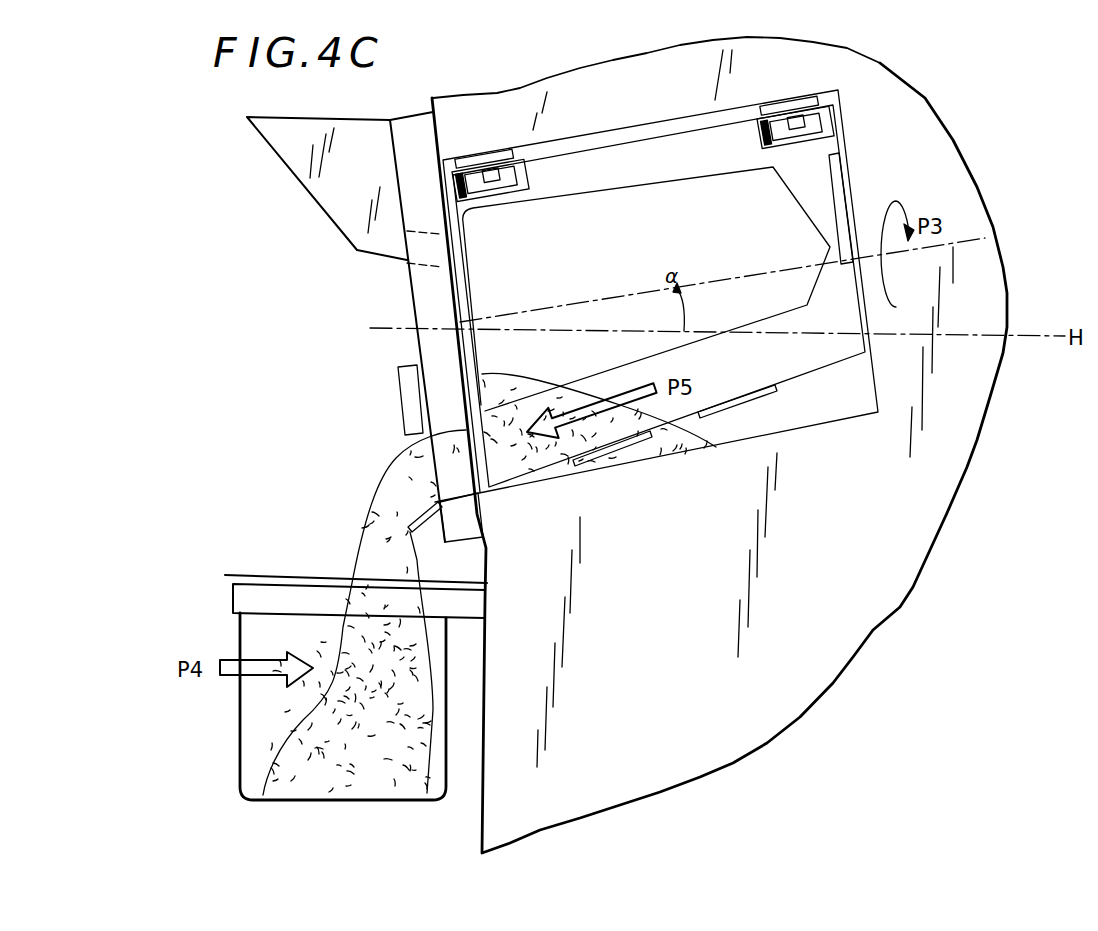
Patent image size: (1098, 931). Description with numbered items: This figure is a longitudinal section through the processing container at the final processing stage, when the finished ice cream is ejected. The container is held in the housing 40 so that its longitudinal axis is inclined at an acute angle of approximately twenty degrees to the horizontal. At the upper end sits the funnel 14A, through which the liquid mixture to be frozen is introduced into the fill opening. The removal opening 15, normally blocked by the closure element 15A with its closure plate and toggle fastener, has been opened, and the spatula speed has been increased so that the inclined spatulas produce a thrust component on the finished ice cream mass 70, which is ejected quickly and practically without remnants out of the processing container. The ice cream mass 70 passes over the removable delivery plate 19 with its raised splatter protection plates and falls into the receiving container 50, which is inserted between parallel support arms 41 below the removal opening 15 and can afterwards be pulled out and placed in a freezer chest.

The funnel 14A is at (303, 158).
The closure element 15A is at (400, 399).
The removal opening 15 is at (438, 465).
The delivery plate 19 is at (440, 517).
The housing 40 is at (660, 702).
The support arm 41 is at (467, 606).
The receiving container 50 is at (380, 803).
The ice cream mass 70 is at (400, 730).